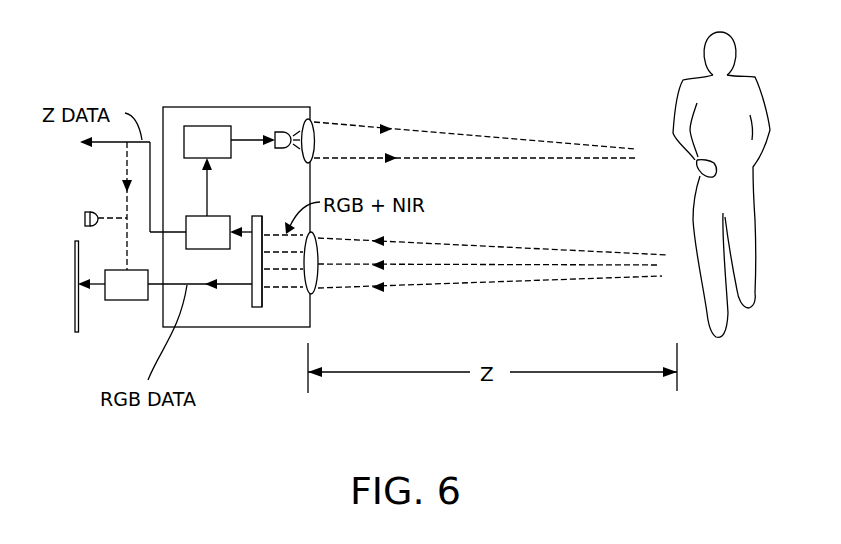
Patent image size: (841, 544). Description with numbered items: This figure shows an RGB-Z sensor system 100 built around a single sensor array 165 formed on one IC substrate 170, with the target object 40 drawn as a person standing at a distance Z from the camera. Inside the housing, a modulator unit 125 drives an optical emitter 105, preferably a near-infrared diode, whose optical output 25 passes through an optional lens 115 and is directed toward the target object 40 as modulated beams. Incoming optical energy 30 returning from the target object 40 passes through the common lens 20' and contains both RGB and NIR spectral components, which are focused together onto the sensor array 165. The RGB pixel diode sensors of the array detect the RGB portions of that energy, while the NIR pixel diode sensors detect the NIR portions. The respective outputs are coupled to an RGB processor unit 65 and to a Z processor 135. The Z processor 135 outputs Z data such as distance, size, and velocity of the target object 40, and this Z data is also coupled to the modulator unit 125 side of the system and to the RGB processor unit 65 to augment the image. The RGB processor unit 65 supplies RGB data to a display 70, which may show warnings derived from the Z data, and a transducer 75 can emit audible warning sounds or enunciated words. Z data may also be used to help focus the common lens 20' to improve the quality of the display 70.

The RGB-Z sensor system 100 is at (212, 92).
The modulator unit 125 is at (207, 142).
The Z processor 135 is at (208, 232).
The optical emitter 105 is at (283, 150).
The lens 115 is at (315, 122).
The common lens 20' is at (331, 294).
The IC substrate 170 is at (244, 304).
The sensor array 165 is at (264, 302).
The RGB processor unit 65 is at (126, 285).
The display 70 is at (70, 314).
The transducer 75 is at (98, 210).
The optical output 25 is at (450, 114).
The incoming optical energy 30 is at (452, 245).
The target object 40 is at (672, 122).